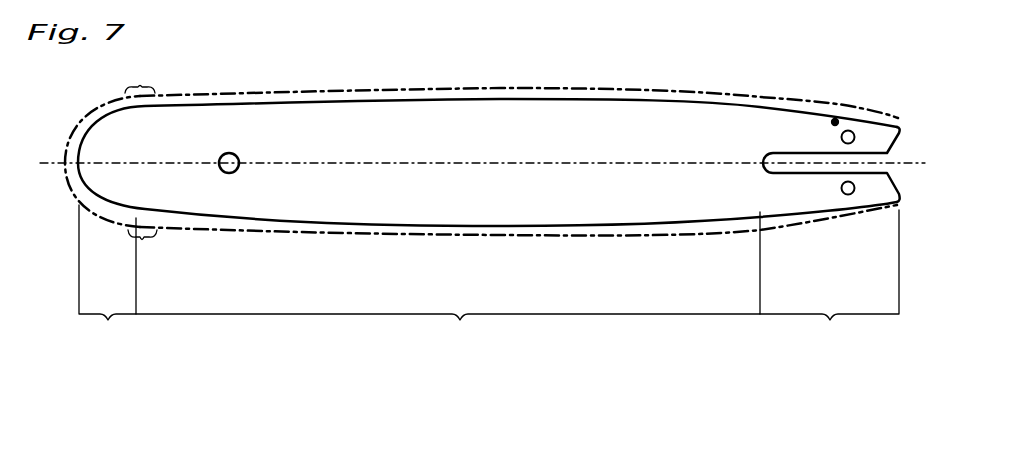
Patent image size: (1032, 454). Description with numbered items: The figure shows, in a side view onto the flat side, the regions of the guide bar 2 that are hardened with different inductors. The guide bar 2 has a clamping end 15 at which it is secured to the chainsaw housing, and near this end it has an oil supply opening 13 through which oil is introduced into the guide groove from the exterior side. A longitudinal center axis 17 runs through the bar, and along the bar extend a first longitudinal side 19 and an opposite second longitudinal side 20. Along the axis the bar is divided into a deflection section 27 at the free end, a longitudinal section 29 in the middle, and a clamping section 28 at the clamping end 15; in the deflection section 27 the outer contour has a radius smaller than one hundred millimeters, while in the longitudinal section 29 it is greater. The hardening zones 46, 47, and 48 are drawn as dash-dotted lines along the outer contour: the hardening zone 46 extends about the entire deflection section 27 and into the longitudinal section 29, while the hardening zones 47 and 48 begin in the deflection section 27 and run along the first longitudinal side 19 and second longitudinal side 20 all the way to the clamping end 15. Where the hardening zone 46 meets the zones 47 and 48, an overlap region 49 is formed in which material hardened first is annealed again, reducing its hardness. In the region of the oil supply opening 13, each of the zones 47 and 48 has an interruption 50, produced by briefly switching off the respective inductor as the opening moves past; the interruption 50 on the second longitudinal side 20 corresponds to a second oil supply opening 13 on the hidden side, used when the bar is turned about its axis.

The guide bar 2 is at (501, 155).
The oil supply opening 13 is at (835, 119).
The clamping end 15 is at (902, 132).
The longitudinal center axis 17 is at (532, 162).
The first longitudinal side 19 is at (673, 89).
The second longitudinal side 20 is at (659, 237).
The deflection section 27 is at (107, 276).
The clamping section 28 is at (829, 283).
The longitudinal section 29 is at (448, 282).
The hardening zone 46 is at (72, 135).
The hardening zone 47 is at (282, 92).
The hardening zone 48 is at (347, 233).
The overlap region 49 is at (147, 164).
The interruption 50 is at (829, 207).